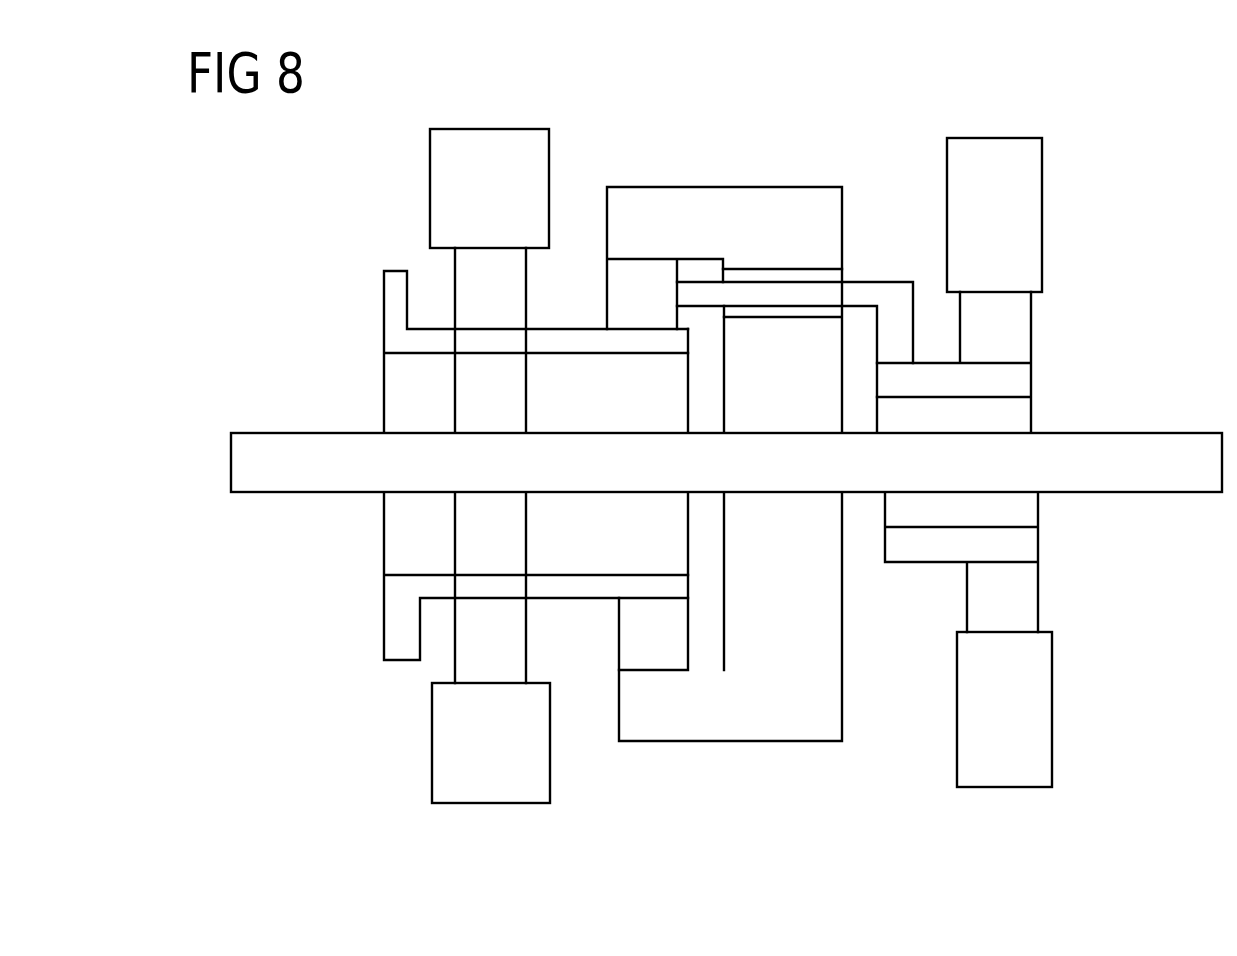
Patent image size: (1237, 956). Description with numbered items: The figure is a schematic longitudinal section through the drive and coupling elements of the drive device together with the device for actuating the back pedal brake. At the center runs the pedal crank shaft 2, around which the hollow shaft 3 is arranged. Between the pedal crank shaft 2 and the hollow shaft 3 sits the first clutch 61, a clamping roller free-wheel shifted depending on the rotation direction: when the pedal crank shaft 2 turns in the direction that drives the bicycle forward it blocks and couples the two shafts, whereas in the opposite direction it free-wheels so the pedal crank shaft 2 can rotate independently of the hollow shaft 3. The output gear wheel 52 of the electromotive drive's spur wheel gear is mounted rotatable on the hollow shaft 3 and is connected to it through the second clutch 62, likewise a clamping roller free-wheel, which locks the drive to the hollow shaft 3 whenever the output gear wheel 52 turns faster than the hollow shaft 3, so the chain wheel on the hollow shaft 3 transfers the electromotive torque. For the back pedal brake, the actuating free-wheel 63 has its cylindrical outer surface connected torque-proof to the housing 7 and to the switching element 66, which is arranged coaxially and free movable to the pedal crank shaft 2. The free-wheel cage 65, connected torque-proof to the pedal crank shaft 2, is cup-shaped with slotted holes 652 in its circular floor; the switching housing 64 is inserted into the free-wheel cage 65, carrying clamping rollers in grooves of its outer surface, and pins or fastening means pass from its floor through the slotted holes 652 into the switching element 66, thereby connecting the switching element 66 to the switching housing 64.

The pedal crank shaft 2 is at (1128, 447).
The hollow shaft 3 is at (397, 603).
The housing 7 is at (1026, 233).
The output gear wheel 52 is at (512, 142).
The first clutch 61 is at (462, 397).
The second clutch 62 is at (467, 661).
The actuating free-wheel 63 is at (1023, 606).
The switching housing 64 is at (662, 653).
The free-wheel cage 65 is at (702, 197).
The switching element 66 is at (888, 277).
The slotted holes 652 is at (767, 267).